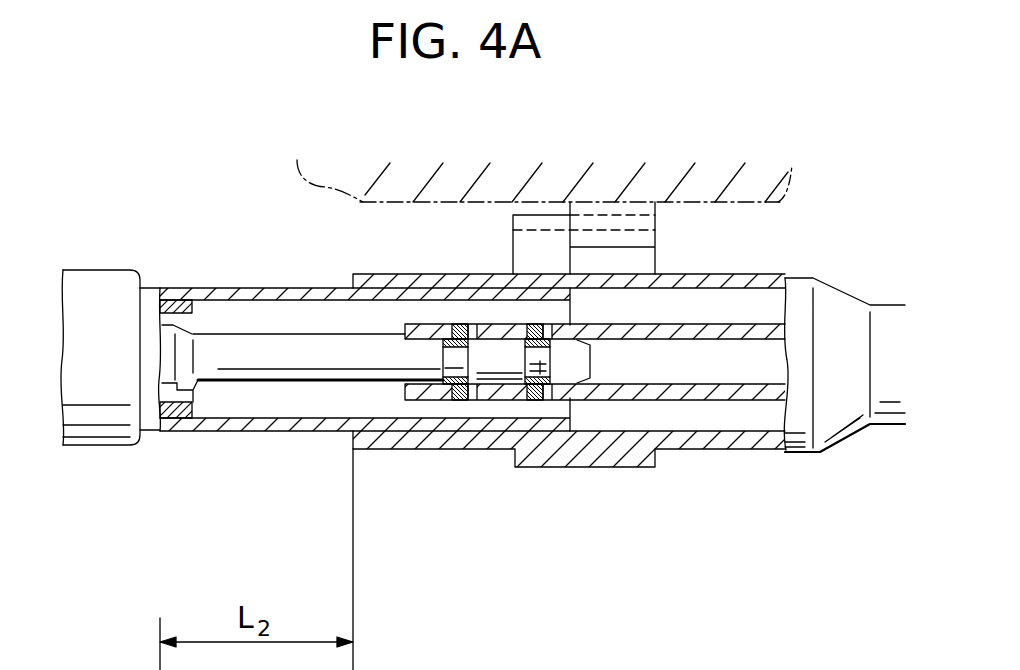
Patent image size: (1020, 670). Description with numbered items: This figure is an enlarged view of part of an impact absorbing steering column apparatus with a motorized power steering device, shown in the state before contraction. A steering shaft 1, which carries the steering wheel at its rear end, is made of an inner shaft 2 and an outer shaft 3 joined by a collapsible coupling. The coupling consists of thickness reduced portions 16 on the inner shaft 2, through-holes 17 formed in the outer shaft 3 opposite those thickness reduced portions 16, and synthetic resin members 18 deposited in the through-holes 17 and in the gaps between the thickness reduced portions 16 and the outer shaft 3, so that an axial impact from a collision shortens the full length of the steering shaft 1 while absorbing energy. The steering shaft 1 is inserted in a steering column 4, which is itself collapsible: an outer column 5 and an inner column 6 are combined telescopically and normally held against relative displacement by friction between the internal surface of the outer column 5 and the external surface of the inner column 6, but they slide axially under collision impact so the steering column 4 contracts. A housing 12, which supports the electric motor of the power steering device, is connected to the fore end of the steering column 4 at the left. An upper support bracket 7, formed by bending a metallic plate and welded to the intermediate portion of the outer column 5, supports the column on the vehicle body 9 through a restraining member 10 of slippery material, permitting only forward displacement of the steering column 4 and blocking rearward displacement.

The steering shaft 1 is at (204, 247).
The inner shaft 2 is at (263, 345).
The outer shaft 3 is at (746, 333).
The steering column 4 is at (848, 303).
The outer column 5 is at (742, 284).
The inner column 6 is at (320, 290).
The upper support bracket 7 is at (642, 462).
The vehicle body 9 is at (541, 167).
The restraining member 10 is at (657, 207).
The housing 12 is at (99, 288).
The thickness reduced portions 16 is at (552, 348).
The through-holes 17 is at (532, 330).
The synthetic resin members 18 is at (508, 346).